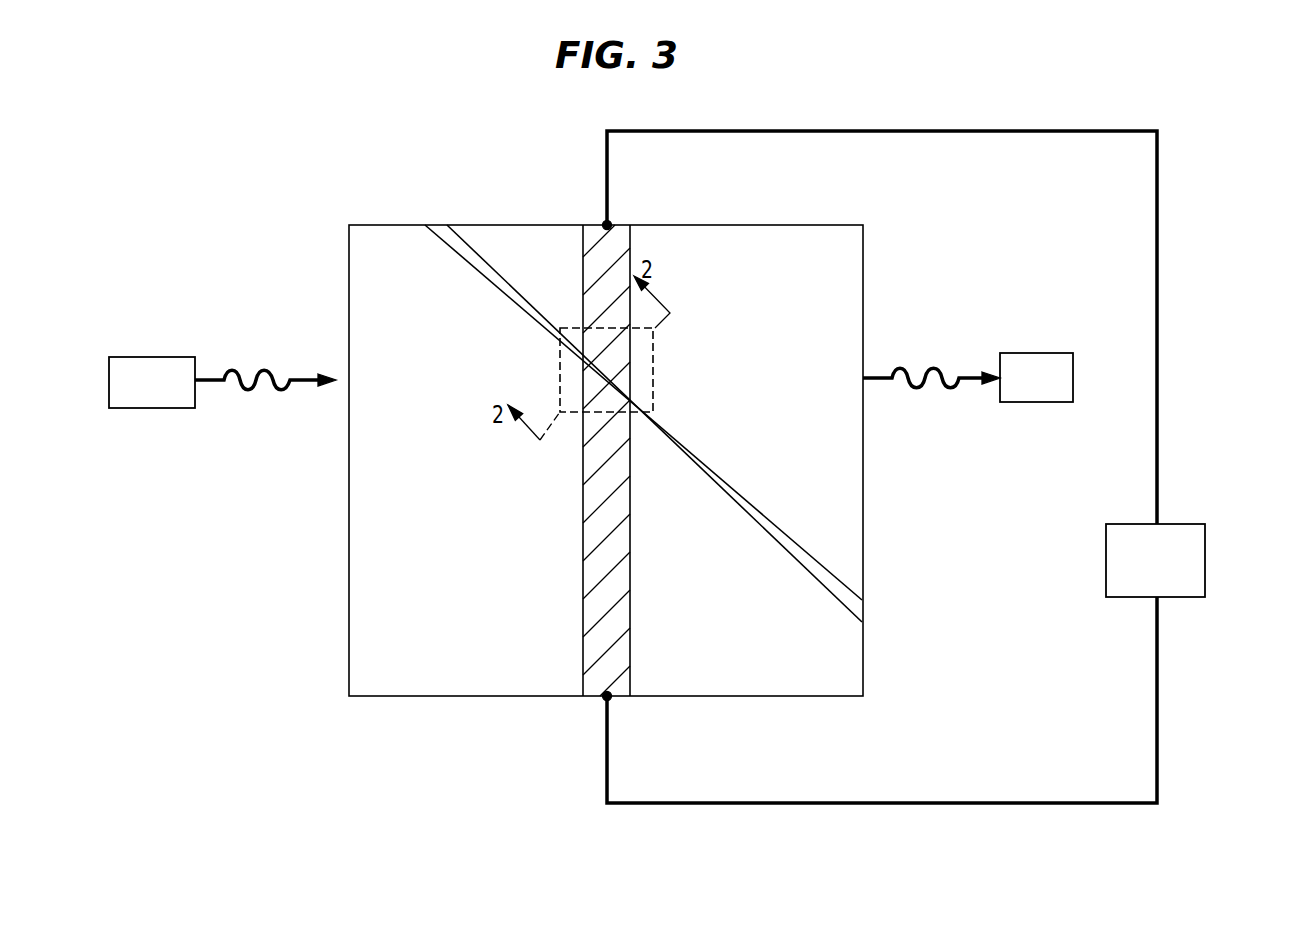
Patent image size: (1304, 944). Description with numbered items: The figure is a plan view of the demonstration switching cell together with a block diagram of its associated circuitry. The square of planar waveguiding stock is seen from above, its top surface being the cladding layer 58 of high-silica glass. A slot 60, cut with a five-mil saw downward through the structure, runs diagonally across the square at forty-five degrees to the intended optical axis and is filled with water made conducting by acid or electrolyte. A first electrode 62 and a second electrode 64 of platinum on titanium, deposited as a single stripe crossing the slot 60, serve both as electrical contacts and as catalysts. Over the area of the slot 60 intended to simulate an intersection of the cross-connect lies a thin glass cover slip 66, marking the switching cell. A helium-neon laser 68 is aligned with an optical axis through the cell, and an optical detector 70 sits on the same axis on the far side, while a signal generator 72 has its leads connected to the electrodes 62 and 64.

The cladding layer 58 is at (783, 305).
The slot 60 is at (442, 233).
The first electrode 62 is at (620, 230).
The second electrode 64 is at (620, 697).
The glass cover slip 66 is at (655, 387).
The laser 68 is at (165, 357).
The optical detector 70 is at (1050, 353).
The signal generator 72 is at (1205, 570).